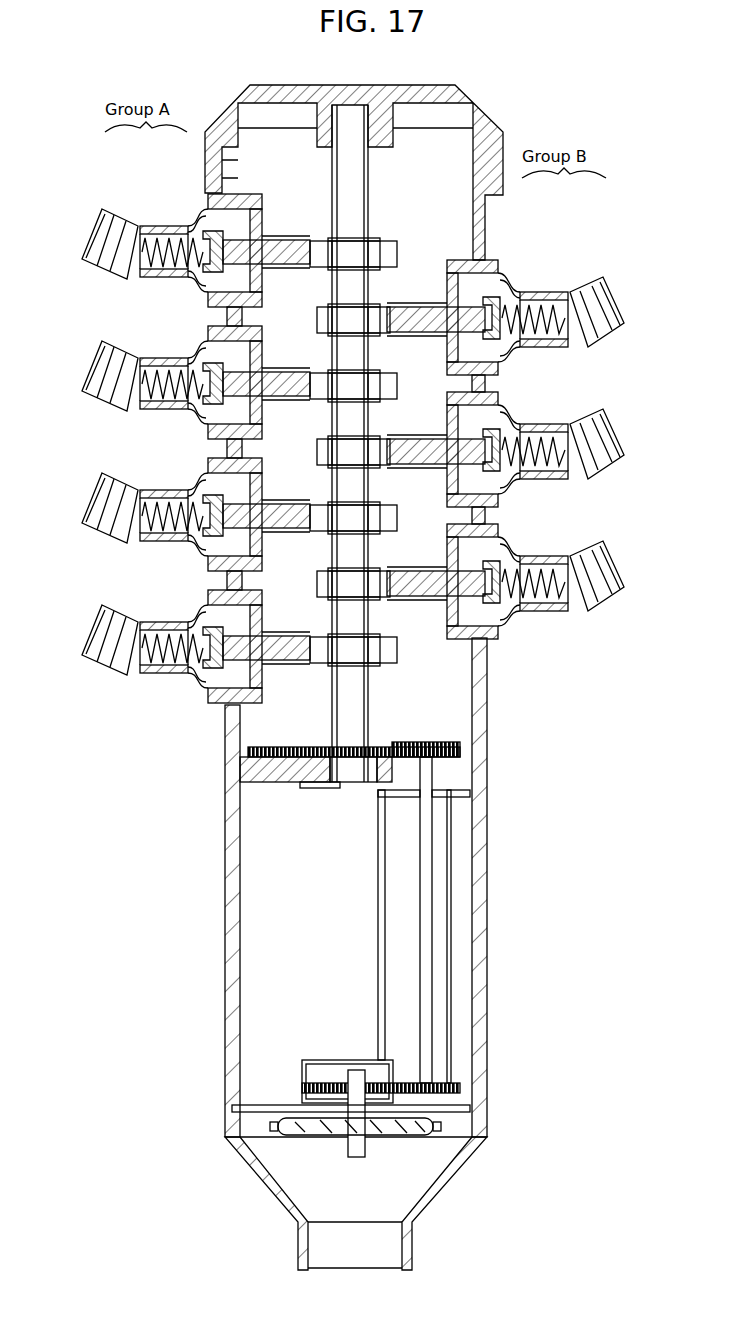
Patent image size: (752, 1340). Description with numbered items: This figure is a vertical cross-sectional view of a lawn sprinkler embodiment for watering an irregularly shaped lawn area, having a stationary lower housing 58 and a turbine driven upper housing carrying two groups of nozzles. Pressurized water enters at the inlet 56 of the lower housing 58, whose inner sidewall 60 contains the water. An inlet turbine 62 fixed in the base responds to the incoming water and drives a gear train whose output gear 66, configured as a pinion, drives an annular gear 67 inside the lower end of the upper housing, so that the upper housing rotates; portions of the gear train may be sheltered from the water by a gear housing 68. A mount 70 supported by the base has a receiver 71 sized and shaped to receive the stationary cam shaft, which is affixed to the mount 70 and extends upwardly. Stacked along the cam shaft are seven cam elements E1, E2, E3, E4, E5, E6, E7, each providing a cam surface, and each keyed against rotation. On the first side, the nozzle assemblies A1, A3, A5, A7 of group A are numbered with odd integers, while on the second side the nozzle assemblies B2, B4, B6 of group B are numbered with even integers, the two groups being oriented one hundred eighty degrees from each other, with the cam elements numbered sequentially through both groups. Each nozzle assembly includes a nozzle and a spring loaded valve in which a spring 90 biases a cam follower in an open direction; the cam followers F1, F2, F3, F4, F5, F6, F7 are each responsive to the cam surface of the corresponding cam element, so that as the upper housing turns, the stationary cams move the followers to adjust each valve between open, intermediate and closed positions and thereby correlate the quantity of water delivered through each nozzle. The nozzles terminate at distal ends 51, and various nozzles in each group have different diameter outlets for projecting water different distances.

The sprinkler nozzle assembly A1 is at (150, 226).
The sprinkler nozzle assembly A3 is at (150, 358).
The sprinkler nozzle assembly A5 is at (150, 490).
The sprinkler nozzle assembly A7 is at (150, 622).
The sprinkler nozzle assembly B2 is at (550, 292).
The sprinkler nozzle assembly B4 is at (550, 424).
The sprinkler nozzle assembly B6 is at (550, 556).
The cam element E1 is at (392, 241).
The cam element E2 is at (318, 307).
The cam element E3 is at (392, 373).
The cam element E4 is at (318, 439).
The cam element E5 is at (392, 505).
The cam element E6 is at (318, 571).
The cam element E7 is at (392, 637).
The cam follower F1 is at (262, 240).
The cam follower F2 is at (447, 307).
The cam follower F3 is at (262, 372).
The cam follower F4 is at (447, 439).
The cam follower F5 is at (262, 504).
The cam follower F6 is at (447, 571).
The cam follower F7 is at (262, 636).
The distal end 51 is at (625, 322).
The spring 90 is at (157, 667).
The annular gear 67 is at (262, 746).
The output gear 66 is at (450, 742).
The mount 70 is at (240, 770).
The receiver 71 is at (320, 784).
The gear housing 68 is at (378, 928).
The inner sidewall 60 is at (232, 1025).
The inlet turbine 62 is at (405, 1135).
The lower housing 58 is at (455, 1172).
The inlet 56 is at (412, 1270).